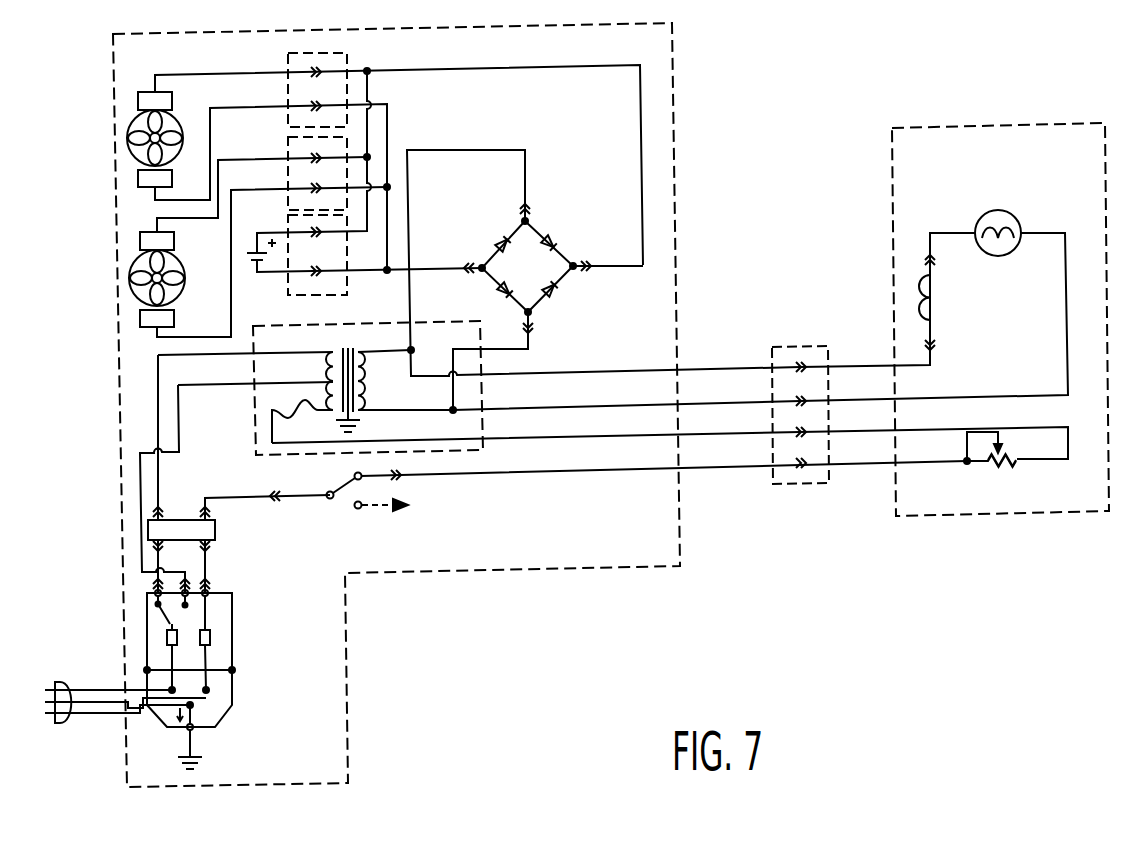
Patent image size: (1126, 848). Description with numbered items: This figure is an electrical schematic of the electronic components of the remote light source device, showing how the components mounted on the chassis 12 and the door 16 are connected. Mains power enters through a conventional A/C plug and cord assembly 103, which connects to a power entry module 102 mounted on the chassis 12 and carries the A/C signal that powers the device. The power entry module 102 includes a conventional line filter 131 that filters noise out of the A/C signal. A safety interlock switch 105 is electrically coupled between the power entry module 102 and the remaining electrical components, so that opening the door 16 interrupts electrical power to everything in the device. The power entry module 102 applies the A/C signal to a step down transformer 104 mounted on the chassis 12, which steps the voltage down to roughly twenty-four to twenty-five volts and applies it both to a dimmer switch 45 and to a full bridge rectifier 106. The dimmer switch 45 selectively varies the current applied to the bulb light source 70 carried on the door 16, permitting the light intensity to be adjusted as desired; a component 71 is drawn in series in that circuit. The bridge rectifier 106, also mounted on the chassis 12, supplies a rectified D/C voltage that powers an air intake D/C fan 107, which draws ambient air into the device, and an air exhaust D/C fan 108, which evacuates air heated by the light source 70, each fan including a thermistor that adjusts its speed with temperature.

The chassis 12 is at (673, 58).
The door 16 is at (1018, 126).
The dimmer switch 45 is at (1013, 462).
The light source 70 is at (1020, 216).
The coil / inductor 71 is at (941, 309).
The power entry module 102 is at (232, 670).
The A/C plug and cord assembly 103 is at (92, 713).
The step down transformer 104 is at (253, 448).
The safety interlock switch 105 is at (330, 498).
The full bridge rectifier 106 is at (558, 300).
The air intake D/C fan 107 is at (181, 122).
The air exhaust D/C fan 108 is at (184, 262).
The line filter 131 is at (215, 530).